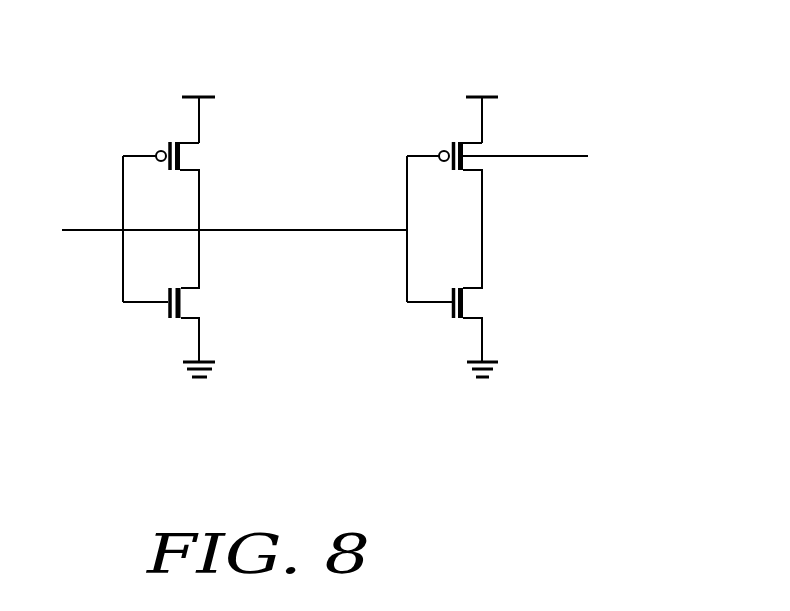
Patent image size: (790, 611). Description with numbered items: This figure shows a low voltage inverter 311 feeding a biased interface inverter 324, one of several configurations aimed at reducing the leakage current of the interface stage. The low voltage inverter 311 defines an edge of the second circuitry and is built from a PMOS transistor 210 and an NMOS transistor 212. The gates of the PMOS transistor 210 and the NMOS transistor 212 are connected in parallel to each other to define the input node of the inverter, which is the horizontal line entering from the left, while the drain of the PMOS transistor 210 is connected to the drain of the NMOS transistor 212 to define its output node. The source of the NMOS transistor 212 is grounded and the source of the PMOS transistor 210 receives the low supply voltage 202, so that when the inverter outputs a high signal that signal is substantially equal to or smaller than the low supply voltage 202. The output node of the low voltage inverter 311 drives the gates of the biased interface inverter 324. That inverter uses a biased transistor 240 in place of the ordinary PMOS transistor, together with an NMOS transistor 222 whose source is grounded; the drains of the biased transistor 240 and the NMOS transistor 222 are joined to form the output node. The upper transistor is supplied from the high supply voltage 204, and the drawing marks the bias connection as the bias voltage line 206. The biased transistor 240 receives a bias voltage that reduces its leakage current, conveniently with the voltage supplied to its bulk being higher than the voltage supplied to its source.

The V_L supply voltage 202 is at (198, 99).
The V_H supply voltage 204 is at (482, 99).
The bias voltage output VB 206 is at (536, 135).
The PMOS transistor P1 210 is at (183, 180).
The NMOS transistor N1 212 is at (183, 296).
The NMOS transistor N2 222 is at (469, 296).
The biased transistor PB4 240 is at (444, 163).
The low voltage inverter 311 is at (184, 261).
The biased interface inverter 324 is at (503, 274).